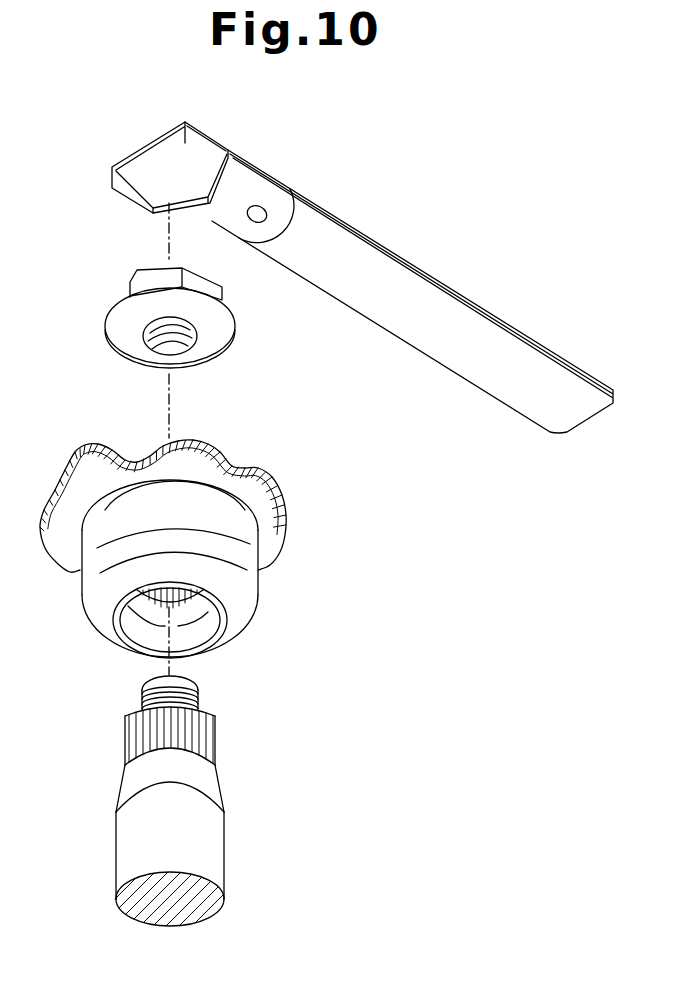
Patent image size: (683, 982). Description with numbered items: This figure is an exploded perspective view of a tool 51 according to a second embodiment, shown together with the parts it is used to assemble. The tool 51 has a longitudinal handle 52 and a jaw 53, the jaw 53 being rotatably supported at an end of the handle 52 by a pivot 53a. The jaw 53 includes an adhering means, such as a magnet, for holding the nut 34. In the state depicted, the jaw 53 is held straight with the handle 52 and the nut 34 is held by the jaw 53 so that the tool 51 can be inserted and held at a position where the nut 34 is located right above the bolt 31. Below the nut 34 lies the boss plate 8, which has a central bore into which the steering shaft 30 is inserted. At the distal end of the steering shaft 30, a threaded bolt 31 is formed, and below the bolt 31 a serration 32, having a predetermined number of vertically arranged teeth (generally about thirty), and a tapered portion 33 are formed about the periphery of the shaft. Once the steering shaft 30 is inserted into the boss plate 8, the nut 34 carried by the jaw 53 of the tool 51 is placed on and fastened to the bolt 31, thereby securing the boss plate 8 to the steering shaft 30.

The boss plate 8 is at (276, 570).
The steering shaft 30 is at (223, 853).
The bolt 31 is at (198, 697).
The serration 32 is at (215, 745).
The tapered portion 33 is at (219, 785).
The nut 34 is at (222, 294).
The tool 51 is at (408, 226).
The handle 52 is at (430, 276).
The jaw 53 is at (218, 136).
The pivot 53a is at (268, 216).